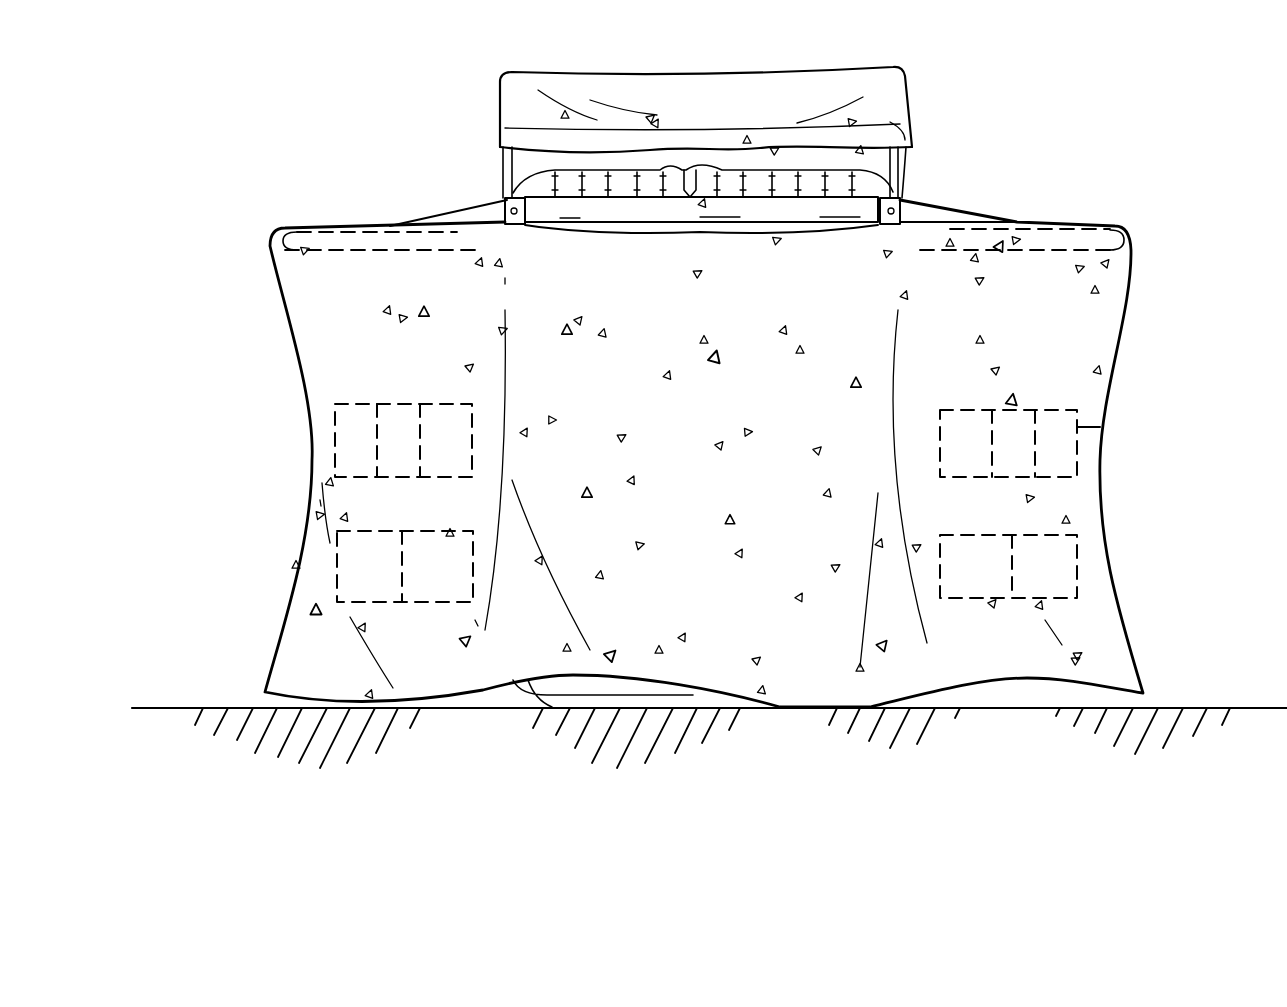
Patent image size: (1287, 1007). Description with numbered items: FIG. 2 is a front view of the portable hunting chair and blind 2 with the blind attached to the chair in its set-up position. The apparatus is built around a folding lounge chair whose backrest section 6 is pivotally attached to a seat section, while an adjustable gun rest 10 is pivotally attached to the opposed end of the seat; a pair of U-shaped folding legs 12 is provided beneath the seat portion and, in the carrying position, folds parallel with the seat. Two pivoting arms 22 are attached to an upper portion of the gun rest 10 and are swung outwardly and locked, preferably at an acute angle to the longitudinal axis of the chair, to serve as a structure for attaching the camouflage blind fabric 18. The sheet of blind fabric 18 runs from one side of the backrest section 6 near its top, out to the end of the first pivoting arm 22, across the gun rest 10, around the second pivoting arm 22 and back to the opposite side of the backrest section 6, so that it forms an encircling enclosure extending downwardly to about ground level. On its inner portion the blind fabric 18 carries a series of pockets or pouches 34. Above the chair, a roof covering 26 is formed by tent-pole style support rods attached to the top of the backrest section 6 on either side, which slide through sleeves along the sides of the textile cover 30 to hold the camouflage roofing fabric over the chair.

The portable hunting chair and blind 2 is at (352, 125).
The backrest section 6 is at (837, 180).
The adjustable gun rest 10 is at (540, 207).
The U-shaped folding legs 12 is at (537, 682).
The camouflage blind fabric 18 is at (302, 282).
The pivoting arms 22 is at (350, 233).
The roof covering 26 is at (770, 70).
The textile cover 30 is at (620, 88).
The pockets or pouches 34 is at (338, 437).